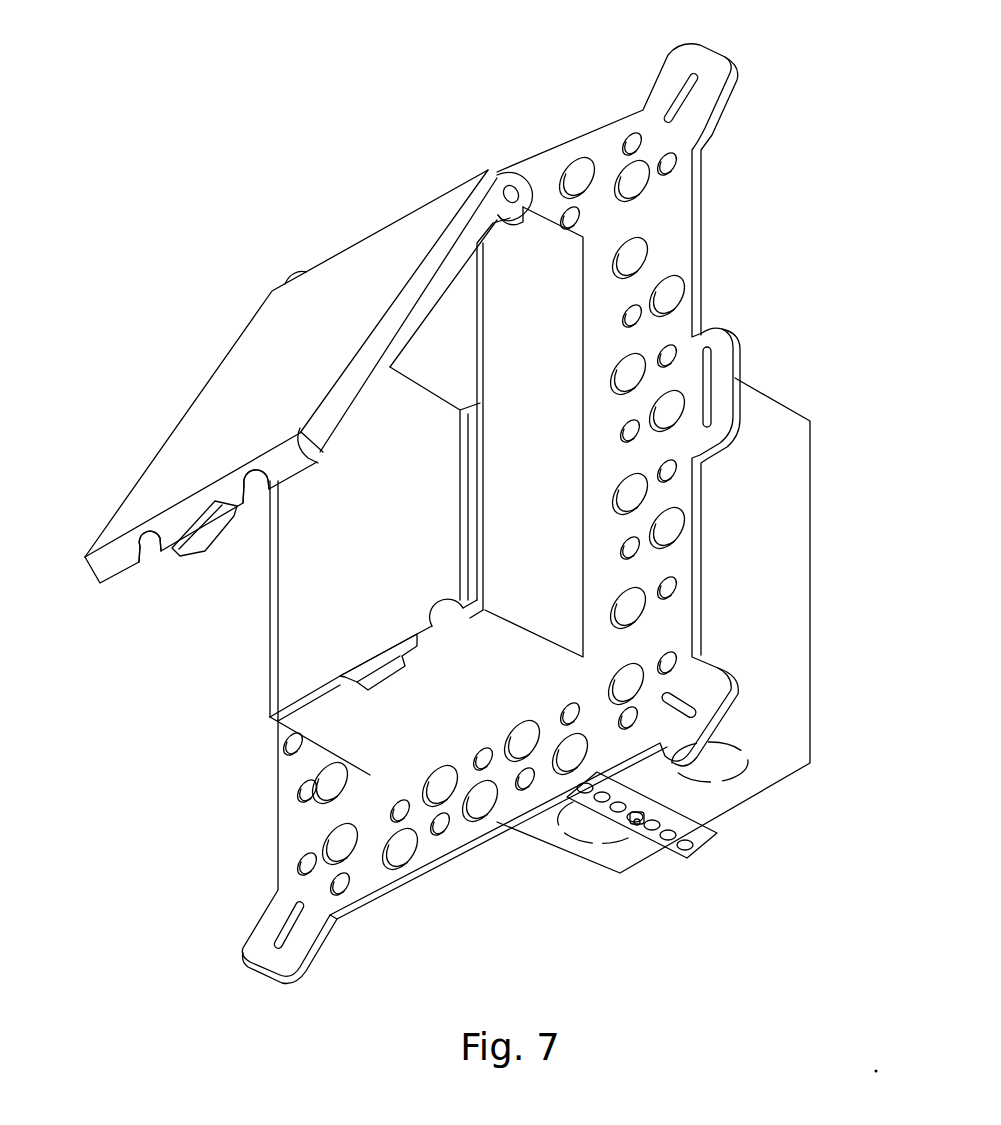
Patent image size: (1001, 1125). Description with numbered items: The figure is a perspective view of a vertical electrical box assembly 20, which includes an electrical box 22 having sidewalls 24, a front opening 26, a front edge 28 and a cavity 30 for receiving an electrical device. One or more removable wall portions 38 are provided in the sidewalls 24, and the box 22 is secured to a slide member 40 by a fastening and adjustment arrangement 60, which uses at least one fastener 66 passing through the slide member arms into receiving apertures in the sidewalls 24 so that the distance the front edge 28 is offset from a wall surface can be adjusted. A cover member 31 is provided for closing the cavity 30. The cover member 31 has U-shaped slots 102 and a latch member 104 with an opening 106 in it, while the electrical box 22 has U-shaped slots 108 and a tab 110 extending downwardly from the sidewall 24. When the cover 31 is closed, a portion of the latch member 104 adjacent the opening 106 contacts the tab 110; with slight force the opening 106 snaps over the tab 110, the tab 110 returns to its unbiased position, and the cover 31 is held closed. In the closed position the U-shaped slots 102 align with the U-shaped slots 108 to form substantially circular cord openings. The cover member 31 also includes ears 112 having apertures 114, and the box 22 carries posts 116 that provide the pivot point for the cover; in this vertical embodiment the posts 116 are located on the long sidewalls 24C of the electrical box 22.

The electrical box assembly 20 is at (182, 138).
The electrical box 22 is at (770, 392).
The sidewalls 24 is at (512, 430).
The long sidewalls 24C is at (518, 482).
The front opening 26 is at (332, 594).
The front edge 28 is at (477, 419).
The cavity 30 is at (423, 520).
The cover member 31 is at (285, 366).
The removable wall portions 38 is at (705, 769).
The slide member 40 is at (700, 853).
The fastening and adjustment arrangement 60 is at (640, 857).
The fastener 66 is at (700, 827).
The U-shaped slots 102 is at (153, 547).
The latch member 104 is at (197, 528).
The opening 106 is at (195, 500).
The U-shaped slots 108 is at (432, 630).
The tab 110 is at (383, 683).
The ears 112 is at (510, 224).
The apertures 114 is at (497, 174).
The posts 116 is at (515, 185).